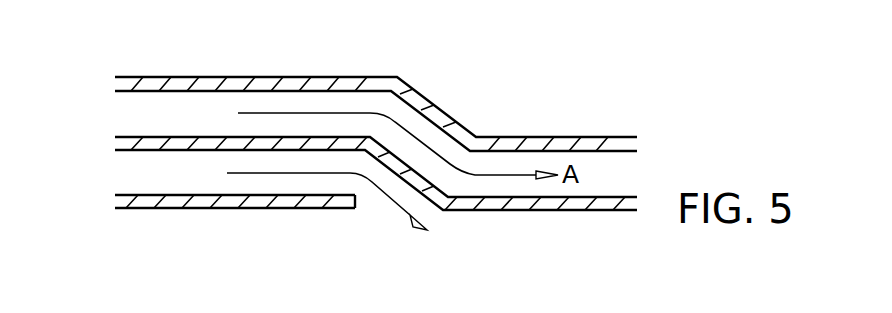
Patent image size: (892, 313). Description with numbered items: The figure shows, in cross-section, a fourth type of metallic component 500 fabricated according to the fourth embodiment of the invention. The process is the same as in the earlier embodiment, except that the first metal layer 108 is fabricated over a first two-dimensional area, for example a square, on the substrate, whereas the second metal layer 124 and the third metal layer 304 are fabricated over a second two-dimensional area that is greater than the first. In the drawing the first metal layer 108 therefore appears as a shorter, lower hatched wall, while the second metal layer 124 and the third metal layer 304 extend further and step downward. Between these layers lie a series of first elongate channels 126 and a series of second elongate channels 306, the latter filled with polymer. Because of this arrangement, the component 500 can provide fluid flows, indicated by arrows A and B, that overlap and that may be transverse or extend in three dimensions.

The third metal layer 304 is at (330, 85).
The second elongate channels 306 is at (600, 135).
The second metal layer 124 is at (125, 142).
The first metal layer 108 is at (147, 202).
The first elongate channels 126 is at (235, 200).
The metallic component 500 is at (692, 155).